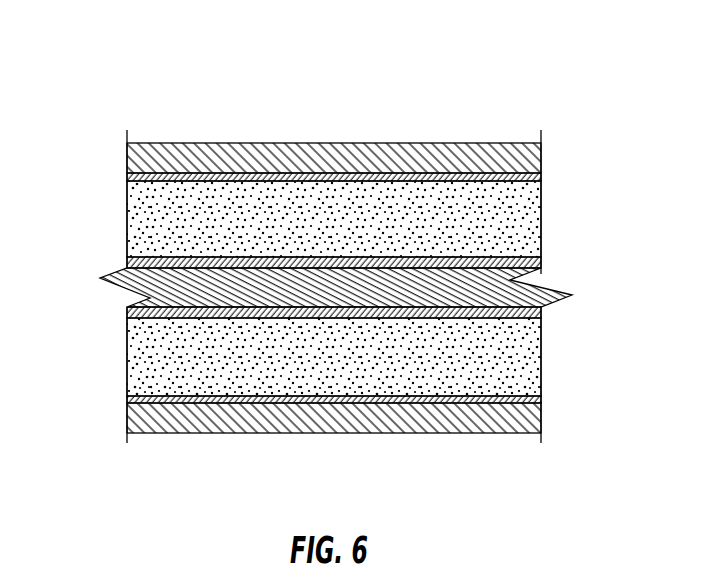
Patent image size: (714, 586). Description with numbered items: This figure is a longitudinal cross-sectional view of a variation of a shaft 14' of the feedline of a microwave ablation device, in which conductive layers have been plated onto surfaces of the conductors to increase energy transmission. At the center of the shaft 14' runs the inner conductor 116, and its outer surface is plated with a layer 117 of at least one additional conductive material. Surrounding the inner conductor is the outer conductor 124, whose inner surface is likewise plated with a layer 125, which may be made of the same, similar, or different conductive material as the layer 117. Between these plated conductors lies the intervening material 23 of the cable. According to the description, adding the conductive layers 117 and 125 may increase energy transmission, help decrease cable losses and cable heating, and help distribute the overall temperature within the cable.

The shaft 14' is at (331, 249).
The outer conductor 124 is at (392, 142).
The layer 125 is at (170, 175).
The core layer 23 is at (528, 210).
The layer 117 is at (155, 260).
The inner conductor 116 is at (533, 284).